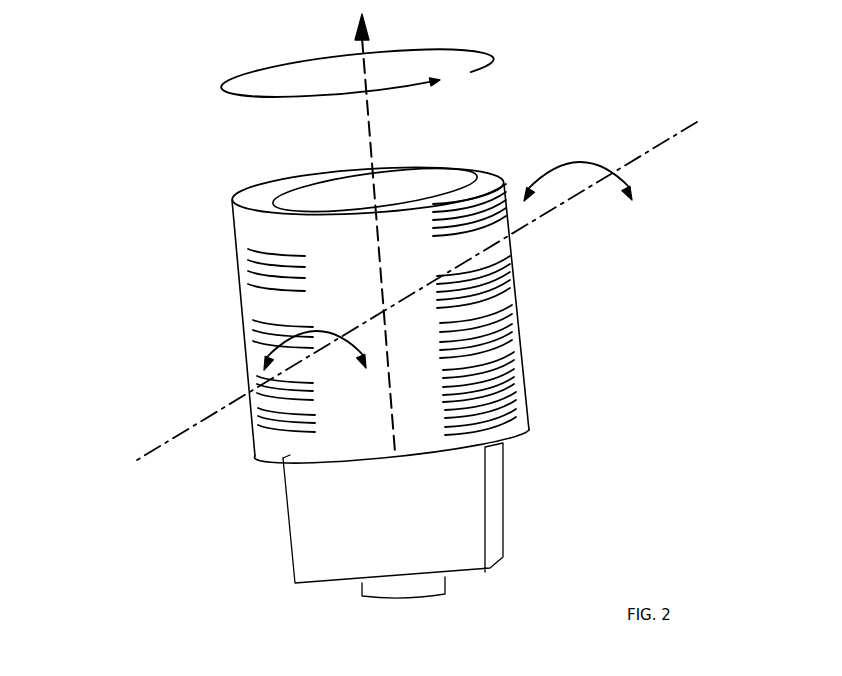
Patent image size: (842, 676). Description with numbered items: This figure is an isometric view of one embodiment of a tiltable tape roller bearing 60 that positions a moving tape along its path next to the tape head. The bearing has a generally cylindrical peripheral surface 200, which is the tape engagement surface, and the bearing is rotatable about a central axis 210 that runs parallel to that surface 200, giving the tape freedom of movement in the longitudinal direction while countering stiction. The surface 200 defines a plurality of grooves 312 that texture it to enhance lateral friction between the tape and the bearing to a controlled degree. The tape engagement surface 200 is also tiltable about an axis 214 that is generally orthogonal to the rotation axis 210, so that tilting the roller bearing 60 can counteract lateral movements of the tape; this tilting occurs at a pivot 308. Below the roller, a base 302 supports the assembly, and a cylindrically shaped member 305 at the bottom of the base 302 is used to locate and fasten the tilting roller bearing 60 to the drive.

The tape roller bearing 60 is at (152, 262).
The cylindrical peripheral surface 200 is at (500, 356).
The central axis 210 is at (370, 142).
The tilt axis 214 is at (676, 130).
The base 302 is at (283, 511).
The cylindrically shaped member 305 is at (403, 587).
The pivot 308 is at (387, 310).
The grooves 312 is at (497, 290).